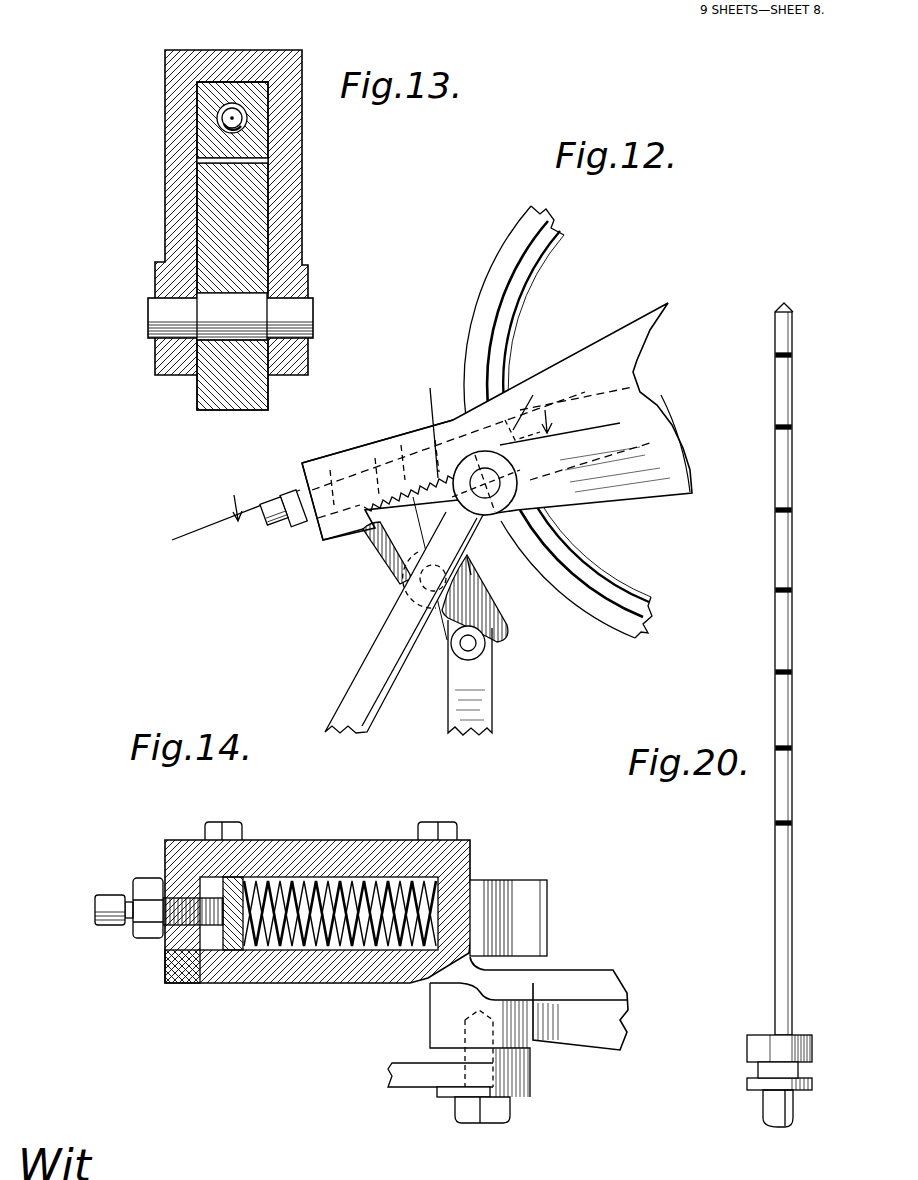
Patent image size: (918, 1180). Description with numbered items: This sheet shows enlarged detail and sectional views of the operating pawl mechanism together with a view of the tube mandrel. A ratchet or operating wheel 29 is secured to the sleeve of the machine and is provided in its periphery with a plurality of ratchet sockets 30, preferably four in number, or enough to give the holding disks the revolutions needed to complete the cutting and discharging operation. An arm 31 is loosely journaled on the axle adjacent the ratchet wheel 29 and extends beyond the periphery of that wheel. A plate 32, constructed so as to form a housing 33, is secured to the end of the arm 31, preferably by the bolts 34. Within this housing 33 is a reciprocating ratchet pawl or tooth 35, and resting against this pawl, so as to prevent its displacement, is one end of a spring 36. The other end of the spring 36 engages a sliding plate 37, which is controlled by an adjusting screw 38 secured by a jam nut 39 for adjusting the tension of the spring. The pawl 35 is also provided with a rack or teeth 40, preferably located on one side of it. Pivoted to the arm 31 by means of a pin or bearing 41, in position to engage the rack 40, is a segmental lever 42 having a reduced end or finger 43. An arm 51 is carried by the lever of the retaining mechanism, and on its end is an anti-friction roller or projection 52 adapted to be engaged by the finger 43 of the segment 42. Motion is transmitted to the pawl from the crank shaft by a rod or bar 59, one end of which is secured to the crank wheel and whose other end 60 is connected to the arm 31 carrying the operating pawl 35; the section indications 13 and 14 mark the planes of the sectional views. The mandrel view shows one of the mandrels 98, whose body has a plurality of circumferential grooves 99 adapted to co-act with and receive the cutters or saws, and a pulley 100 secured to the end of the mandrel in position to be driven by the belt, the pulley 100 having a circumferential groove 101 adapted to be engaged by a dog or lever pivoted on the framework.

In FIG. 12, the barrel housing 13 is at (385, 433).
In FIG. 12, the section line 14 is at (393, 477).
In FIG. 12, the ratchet or operating wheel 29 is at (510, 268).
In FIG. 12, the ratchet sockets 30 is at (544, 406).
In FIG. 13, the arm 31 is at (285, 66).
In FIG. 12, the arm 31 is at (598, 360).
In FIG. 14, the arm 31 is at (595, 1030).
In FIG. 13, the plate 32 is at (218, 62).
In FIG. 14, the plate 32 is at (296, 852).
In FIG. 14, the housing 33 is at (272, 882).
In FIG. 14, the bolts 34 is at (224, 830).
In FIG. 13, the reciprocating ratchet pawl or tooth 35 is at (210, 95).
In FIG. 14, the reciprocating ratchet pawl or tooth 35 is at (530, 893).
In FIG. 13, the spring 36 is at (222, 122).
In FIG. 14, the spring 36 is at (282, 930).
In FIG. 14, the sliding plate 37 is at (234, 930).
In FIG. 12, the adjusting screw 38 is at (272, 523).
In FIG. 14, the adjusting screw 38 is at (113, 908).
In FIG. 12, the jam nut 39 is at (292, 496).
In FIG. 14, the jam nut 39 is at (148, 893).
In FIG. 13, the rack or teeth 40 is at (268, 160).
In FIG. 12, the rack or teeth 40 is at (418, 417).
In FIG. 13, the pin or bearing 41 is at (172, 314).
In FIG. 12, the pin or bearing 41 is at (428, 581).
In FIG. 13, the segmental lever 42 is at (218, 375).
In FIG. 12, the segmental lever 42 is at (468, 578).
In FIG. 12, the reduced end or finger 43 is at (497, 636).
In FIG. 12, the arm 51 is at (475, 712).
In FIG. 12, the anti-friction roller or projection 52 is at (468, 645).
In FIG. 12, the rod or bar 59 is at (440, 642).
In FIG. 14, the rod or bar 59 is at (402, 1072).
In FIG. 12, the end of rod 60 is at (517, 480).
In FIG. 14, the end of rod 60 is at (456, 1094).
In FIG. 20, the mandrels 98 is at (790, 309).
In FIG. 20, the circumferential grooves 99 is at (775, 590).
In FIG. 20, the pulley 100 is at (758, 1040).
In FIG. 20, the circumferential groove 101 is at (757, 1068).